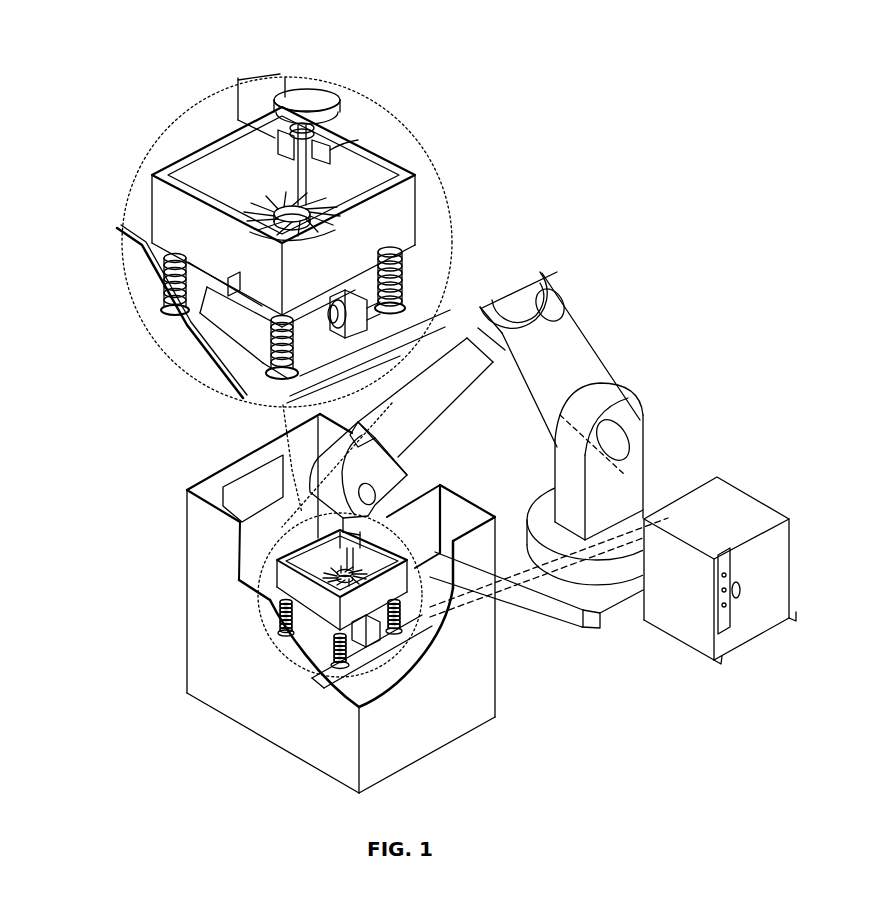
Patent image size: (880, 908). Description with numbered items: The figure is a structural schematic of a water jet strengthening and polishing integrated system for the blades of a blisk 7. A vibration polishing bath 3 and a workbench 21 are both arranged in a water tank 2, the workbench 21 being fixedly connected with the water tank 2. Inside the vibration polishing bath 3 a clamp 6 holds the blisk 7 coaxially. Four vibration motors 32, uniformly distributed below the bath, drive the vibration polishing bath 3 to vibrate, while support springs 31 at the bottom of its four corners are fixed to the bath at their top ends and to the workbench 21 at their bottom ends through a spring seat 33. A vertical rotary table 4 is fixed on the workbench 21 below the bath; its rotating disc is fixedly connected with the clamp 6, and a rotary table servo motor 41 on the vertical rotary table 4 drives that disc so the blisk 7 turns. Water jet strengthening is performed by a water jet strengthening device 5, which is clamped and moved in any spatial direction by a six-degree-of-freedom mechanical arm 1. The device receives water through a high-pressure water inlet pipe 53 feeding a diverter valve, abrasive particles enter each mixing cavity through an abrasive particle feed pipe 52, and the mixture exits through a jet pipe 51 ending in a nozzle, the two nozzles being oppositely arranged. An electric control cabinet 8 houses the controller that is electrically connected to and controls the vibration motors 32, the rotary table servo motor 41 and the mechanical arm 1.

The six-degree-of-freedom mechanical arm 1 is at (560, 370).
The water tank 2 is at (473, 657).
The workbench 21 is at (373, 660).
The vibration polishing bath 3 is at (300, 610).
The support spring 31 is at (213, 274).
The vibration motor 32 is at (236, 289).
The spring seat 33 is at (272, 366).
The vertical rotary table 4 is at (325, 635).
The rotary table servo motor 41 is at (398, 295).
The water jet strengthening device 5 is at (345, 553).
The jet pipe 51 is at (297, 170).
The abrasive particle feed pipe 52 is at (285, 145).
The high-pressure water inlet pipe 53 is at (318, 126).
The clamp 6 is at (235, 210).
The blisk 7 is at (330, 212).
The electric control cabinet 8 is at (727, 500).